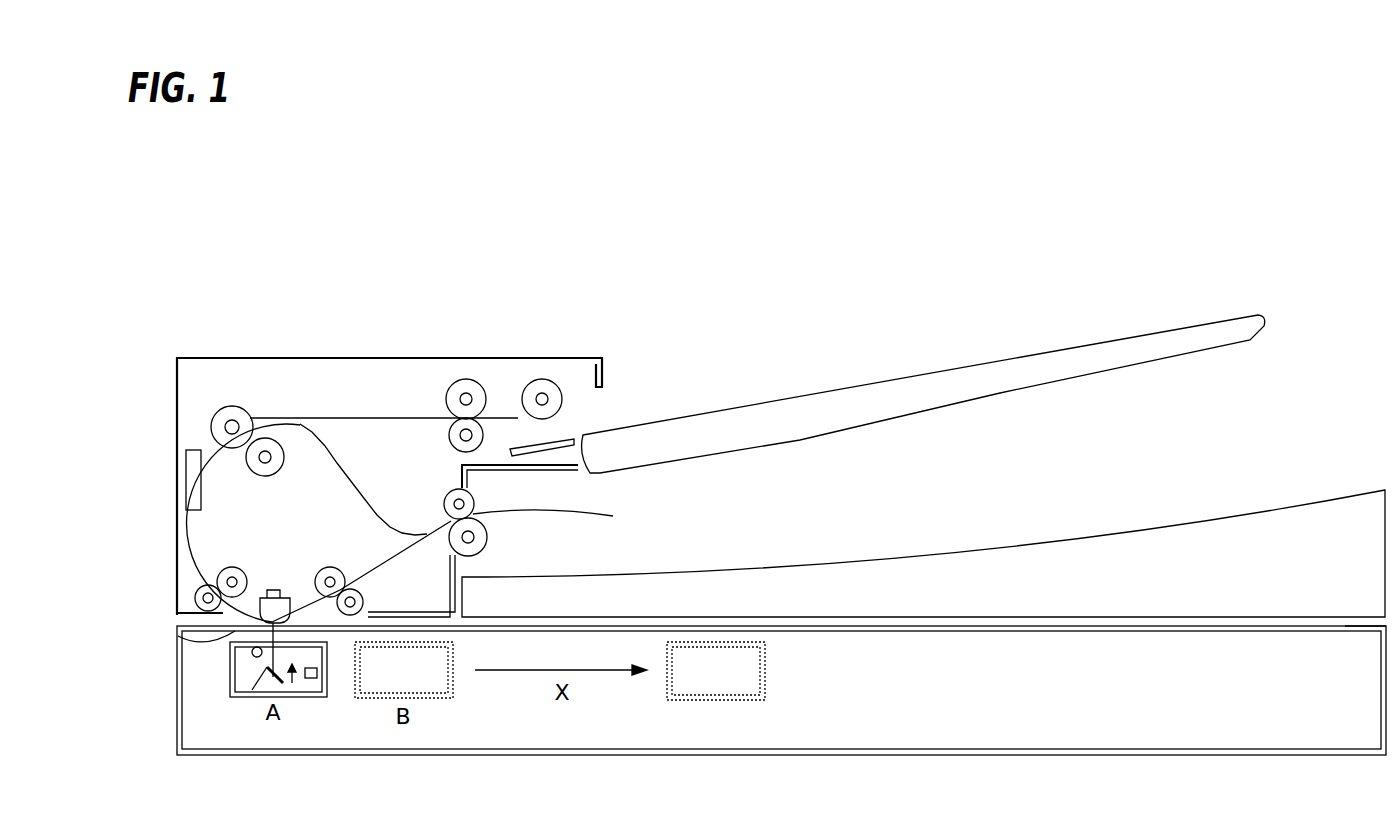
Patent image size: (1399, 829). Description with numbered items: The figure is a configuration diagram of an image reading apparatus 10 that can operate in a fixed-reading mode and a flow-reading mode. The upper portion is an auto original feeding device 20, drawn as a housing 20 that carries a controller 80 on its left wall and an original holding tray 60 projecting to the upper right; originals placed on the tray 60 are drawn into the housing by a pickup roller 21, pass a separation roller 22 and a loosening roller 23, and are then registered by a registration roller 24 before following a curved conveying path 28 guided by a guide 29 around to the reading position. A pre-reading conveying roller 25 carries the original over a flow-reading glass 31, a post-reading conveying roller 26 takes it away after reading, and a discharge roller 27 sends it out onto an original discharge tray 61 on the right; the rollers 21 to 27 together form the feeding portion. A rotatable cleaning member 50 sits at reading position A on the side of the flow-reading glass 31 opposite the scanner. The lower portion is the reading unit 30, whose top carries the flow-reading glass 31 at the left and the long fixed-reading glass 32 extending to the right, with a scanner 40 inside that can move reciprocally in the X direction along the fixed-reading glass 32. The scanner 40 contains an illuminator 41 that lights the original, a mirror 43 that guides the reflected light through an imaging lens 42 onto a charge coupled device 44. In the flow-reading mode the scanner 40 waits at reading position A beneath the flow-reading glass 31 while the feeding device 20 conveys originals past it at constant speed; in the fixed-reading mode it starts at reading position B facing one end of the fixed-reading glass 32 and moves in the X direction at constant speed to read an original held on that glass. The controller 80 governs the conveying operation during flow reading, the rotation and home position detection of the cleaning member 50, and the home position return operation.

The image reading apparatus 10 is at (620, 411).
The auto original feeding device 20 is at (236, 368).
The pickup roller 21 is at (542, 379).
The separation roller 22 is at (466, 379).
The loosening roller 23 is at (449, 438).
The registration roller 24 is at (292, 418).
The pre-reading conveying roller 25 is at (226, 567).
The post-reading conveying roller 26 is at (335, 567).
The discharge roller 27 is at (476, 502).
The conveyance path (drum) 28 is at (333, 467).
The guide 29 is at (420, 527).
The image reading unit 30 is at (178, 692).
The flow-reading glass 31 is at (178, 636).
The fixed-reading glass 32 is at (1103, 632).
The scanner 40 is at (233, 697).
The illuminator 41 is at (252, 655).
The imaging lens 42 is at (310, 698).
The mirror 43 is at (250, 697).
The charge coupled device 44 is at (333, 680).
The cleaning member 50 is at (275, 590).
The original holding tray 60 is at (862, 385).
The original discharge tray 61 is at (811, 567).
The controller 80 is at (188, 469).